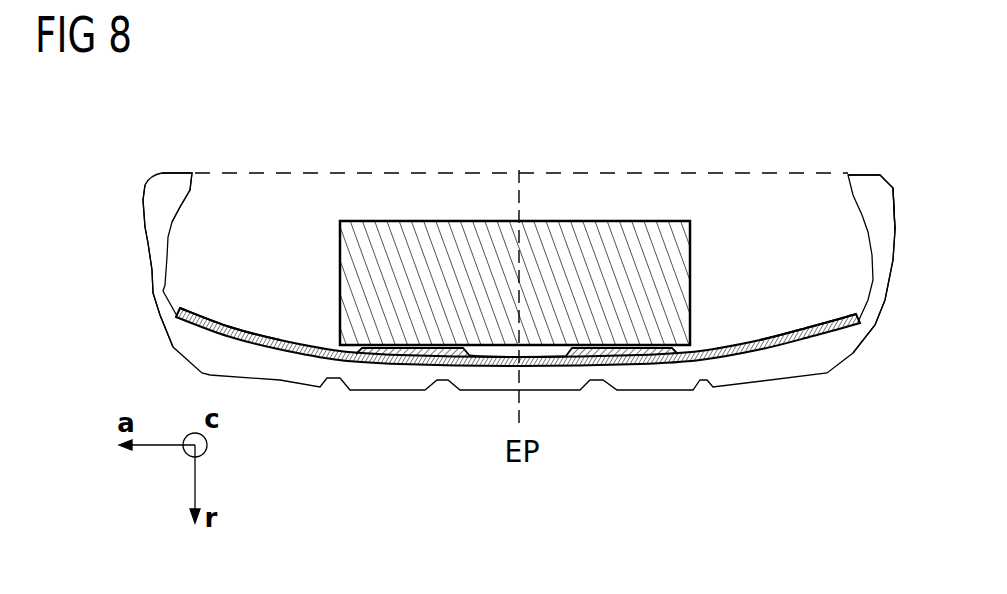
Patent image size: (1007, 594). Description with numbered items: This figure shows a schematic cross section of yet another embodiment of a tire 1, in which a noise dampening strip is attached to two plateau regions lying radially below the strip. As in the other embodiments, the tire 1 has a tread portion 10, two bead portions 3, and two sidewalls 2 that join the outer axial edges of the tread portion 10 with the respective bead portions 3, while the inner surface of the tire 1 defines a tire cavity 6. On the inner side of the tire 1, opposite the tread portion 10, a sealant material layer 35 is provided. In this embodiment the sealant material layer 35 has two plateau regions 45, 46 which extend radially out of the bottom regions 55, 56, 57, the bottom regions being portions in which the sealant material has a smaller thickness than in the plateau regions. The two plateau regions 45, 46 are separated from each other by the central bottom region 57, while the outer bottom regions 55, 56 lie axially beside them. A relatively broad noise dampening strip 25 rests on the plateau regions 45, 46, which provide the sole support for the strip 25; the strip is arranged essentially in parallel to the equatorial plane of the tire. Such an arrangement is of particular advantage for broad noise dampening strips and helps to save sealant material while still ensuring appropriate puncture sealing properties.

The tire 1 is at (248, 148).
The sidewall 2 is at (152, 295).
The bead portion 3 is at (135, 170).
The tire cavity 6 is at (775, 195).
The tread portion 10 is at (810, 386).
The noise dampening strip 25 is at (688, 253).
The sealant material layer 35 is at (216, 318).
The plateau region 45 is at (403, 358).
The plateau region 46 is at (632, 360).
The bottom region 55 is at (278, 337).
The bottom region 56 is at (795, 337).
The bottom region 57 is at (485, 360).